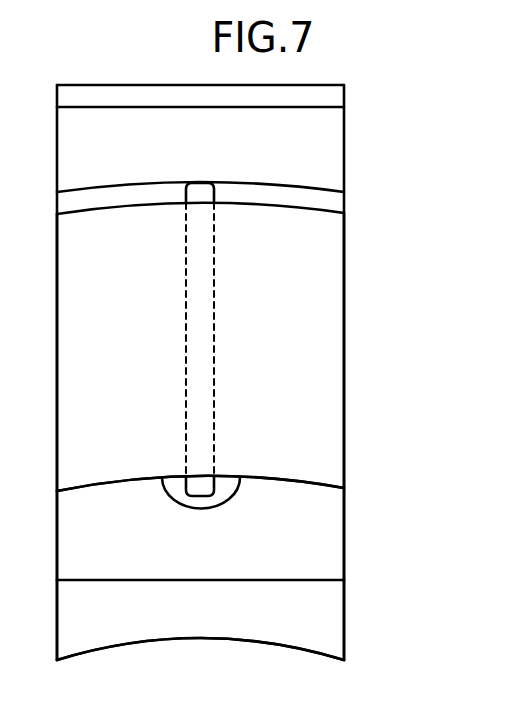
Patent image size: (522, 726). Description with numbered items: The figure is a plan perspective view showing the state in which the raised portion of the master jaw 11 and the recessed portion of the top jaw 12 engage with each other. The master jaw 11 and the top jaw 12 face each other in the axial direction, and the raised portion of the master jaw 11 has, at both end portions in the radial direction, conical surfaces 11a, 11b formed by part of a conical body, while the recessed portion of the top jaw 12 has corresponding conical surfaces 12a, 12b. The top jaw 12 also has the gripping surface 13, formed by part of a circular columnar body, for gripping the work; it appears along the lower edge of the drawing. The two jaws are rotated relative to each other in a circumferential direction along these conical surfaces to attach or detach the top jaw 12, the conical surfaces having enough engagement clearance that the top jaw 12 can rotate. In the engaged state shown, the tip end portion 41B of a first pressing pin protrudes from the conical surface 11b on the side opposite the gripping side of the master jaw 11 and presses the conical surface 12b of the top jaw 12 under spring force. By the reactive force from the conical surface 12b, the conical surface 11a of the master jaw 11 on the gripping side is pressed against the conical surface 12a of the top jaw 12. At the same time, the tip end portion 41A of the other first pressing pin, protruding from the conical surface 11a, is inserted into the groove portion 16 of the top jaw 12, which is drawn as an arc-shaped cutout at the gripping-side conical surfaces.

The master jaw 11 is at (332, 532).
The top jaw 12 is at (332, 615).
The gripping surface 13 is at (245, 642).
The groove portion 16 is at (230, 489).
The conical surface 11a is at (102, 481).
The conical surface 11b is at (282, 208).
The conical surface 12a is at (123, 483).
The conical surface 12b is at (281, 183).
The tip end portion 41A is at (203, 488).
The tip end portion 41B is at (200, 193).